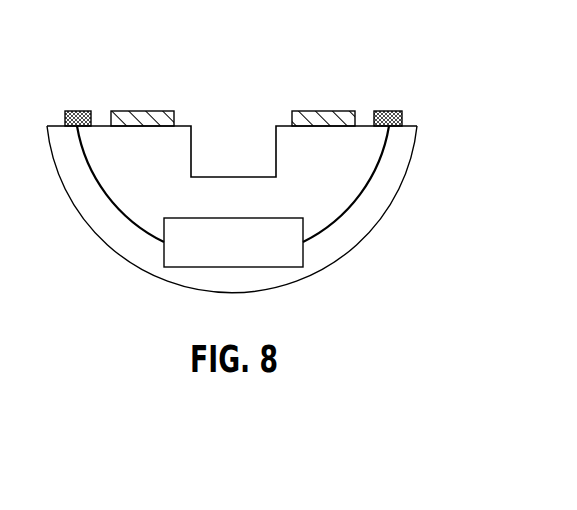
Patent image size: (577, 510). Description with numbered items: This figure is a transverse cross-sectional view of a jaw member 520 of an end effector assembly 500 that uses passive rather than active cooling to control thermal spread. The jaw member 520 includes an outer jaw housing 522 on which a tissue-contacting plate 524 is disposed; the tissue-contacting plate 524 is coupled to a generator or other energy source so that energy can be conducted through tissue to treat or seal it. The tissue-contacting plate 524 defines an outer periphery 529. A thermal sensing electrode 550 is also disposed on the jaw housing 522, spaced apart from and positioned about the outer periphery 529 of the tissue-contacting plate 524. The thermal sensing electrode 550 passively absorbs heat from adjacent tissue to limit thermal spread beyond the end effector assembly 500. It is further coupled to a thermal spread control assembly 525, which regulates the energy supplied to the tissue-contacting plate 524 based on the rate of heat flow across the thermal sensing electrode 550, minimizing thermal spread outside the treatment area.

The end effector assembly 500 is at (278, 47).
The jaw member 520 is at (377, 241).
The outer jaw housing 522 is at (130, 247).
The tissue-contacting plate 524 is at (140, 110).
The thermal spread control assembly 525 is at (240, 268).
The outer periphery 529 is at (105, 116).
The thermal sensing electrode 550 is at (385, 111).